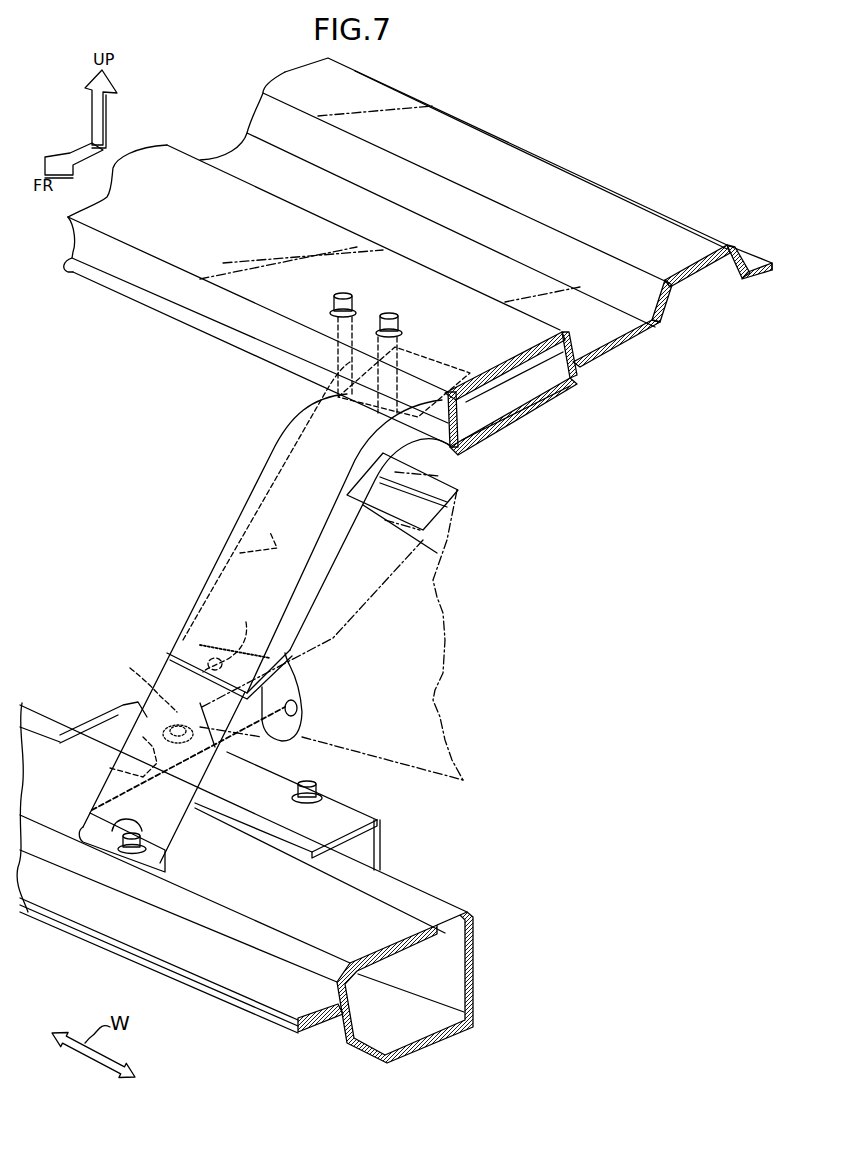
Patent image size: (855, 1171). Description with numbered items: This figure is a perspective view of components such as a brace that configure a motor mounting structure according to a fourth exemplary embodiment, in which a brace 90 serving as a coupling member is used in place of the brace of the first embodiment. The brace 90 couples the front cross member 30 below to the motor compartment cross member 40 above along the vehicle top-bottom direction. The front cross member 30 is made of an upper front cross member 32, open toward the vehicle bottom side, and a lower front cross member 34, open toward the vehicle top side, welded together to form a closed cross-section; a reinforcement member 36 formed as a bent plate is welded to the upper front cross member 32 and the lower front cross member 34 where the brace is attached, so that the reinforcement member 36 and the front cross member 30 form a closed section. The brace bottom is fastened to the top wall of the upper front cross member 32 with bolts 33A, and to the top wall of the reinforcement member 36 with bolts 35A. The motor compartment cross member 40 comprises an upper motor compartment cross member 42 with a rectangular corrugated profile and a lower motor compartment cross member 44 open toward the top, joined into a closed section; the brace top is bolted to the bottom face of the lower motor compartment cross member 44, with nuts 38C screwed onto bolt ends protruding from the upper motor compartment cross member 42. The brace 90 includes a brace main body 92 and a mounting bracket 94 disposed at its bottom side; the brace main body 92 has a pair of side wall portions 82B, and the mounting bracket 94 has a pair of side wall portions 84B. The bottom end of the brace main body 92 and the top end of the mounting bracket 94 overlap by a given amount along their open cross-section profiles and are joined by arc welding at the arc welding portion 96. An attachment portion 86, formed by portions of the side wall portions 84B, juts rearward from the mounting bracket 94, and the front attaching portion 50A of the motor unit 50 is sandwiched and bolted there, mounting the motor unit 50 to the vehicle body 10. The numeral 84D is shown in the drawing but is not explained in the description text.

The vehicle body 10 is at (674, 111).
The motor compartment cross member 40 is at (525, 123).
The upper motor compartment cross member 42 is at (640, 216).
The nuts 38C is at (352, 297).
The lower motor compartment cross member 44 is at (527, 432).
The brace 90 is at (178, 460).
The brace main body 92 is at (271, 426).
The side wall portions 82B is at (352, 572).
The attachment portion 86 is at (236, 648).
The motor unit 50 is at (433, 785).
The front attaching portion 50A is at (333, 753).
The side wall portions 84B is at (110, 768).
The lower bracket bottom plate 84D is at (270, 803).
The reinforcement member 36 is at (340, 810).
The bolts 35A is at (388, 855).
The arc welding portion 96 is at (163, 743).
The bolts 33A is at (120, 821).
The mounting bracket 94 is at (137, 720).
The upper front cross member 32 is at (400, 912).
The front cross member 30 is at (224, 1022).
The lower front cross member 34 is at (352, 1061).